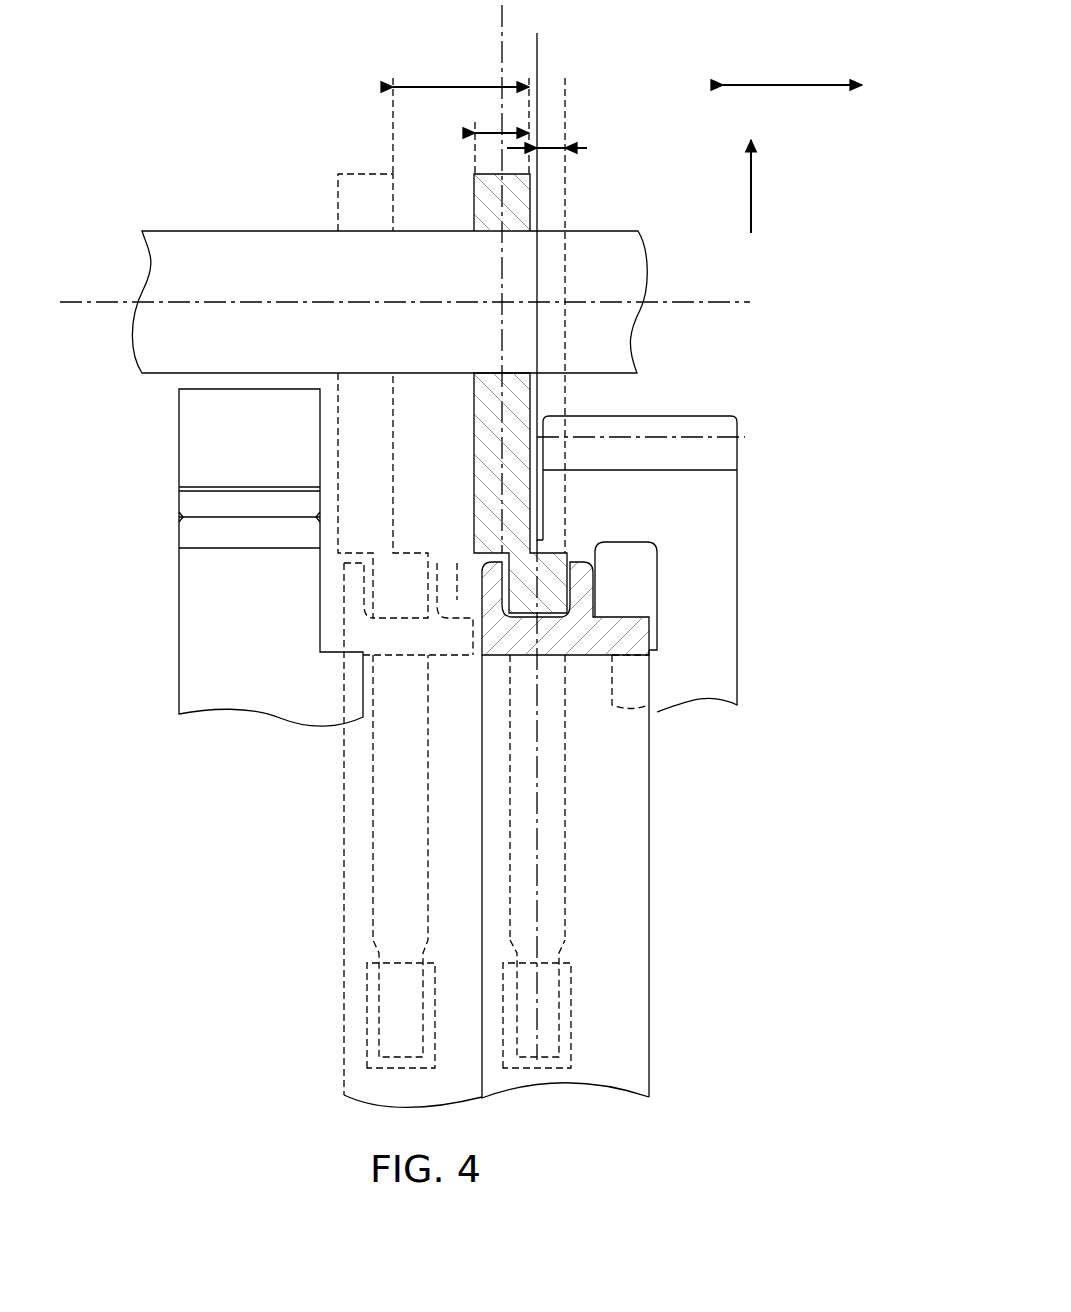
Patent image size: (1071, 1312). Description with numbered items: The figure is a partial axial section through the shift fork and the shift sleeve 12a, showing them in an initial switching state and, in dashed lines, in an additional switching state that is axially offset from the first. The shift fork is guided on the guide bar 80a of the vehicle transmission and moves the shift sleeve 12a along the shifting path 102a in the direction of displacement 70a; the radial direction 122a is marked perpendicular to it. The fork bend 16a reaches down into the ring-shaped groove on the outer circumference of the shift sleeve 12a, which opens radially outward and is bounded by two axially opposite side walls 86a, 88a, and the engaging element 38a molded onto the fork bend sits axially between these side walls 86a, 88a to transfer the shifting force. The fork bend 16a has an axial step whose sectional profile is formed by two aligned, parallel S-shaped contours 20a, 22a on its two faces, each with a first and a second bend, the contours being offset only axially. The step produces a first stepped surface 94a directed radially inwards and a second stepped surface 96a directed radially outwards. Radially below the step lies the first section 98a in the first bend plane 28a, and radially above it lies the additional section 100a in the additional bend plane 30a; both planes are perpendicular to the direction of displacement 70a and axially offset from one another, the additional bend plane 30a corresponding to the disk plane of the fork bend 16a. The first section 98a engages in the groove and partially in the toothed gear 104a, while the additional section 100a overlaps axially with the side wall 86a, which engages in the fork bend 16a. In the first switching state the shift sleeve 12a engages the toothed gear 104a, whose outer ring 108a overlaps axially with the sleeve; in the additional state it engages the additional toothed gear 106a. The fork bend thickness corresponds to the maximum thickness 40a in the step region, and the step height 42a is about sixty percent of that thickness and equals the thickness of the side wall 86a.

The shift sleeve 12a is at (635, 643).
The fork bend 16a is at (515, 382).
The first S-shaped contour 20a is at (585, 554).
The additional S-shaped contour 22a is at (458, 549).
The first bend plane 28a is at (537, 940).
The additional bend plane 30a is at (503, 253).
The engaging element 38a is at (565, 988).
The maximum thickness 40a is at (505, 130).
The step height 42a is at (543, 150).
The direction of displacement 70a is at (793, 83).
The guide bar 80a is at (233, 255).
The side wall 86a is at (488, 588).
The side wall 88a is at (587, 572).
The first stepped surface 94a is at (490, 542).
The second stepped surface 96a is at (554, 553).
The first section 98a is at (548, 593).
The additional section 100a is at (545, 483).
The shifting path 102a is at (462, 87).
The toothed gear 104a is at (678, 682).
The additional toothed gear 106a is at (235, 682).
The ring 108a is at (697, 556).
The radial direction 122a is at (752, 184).